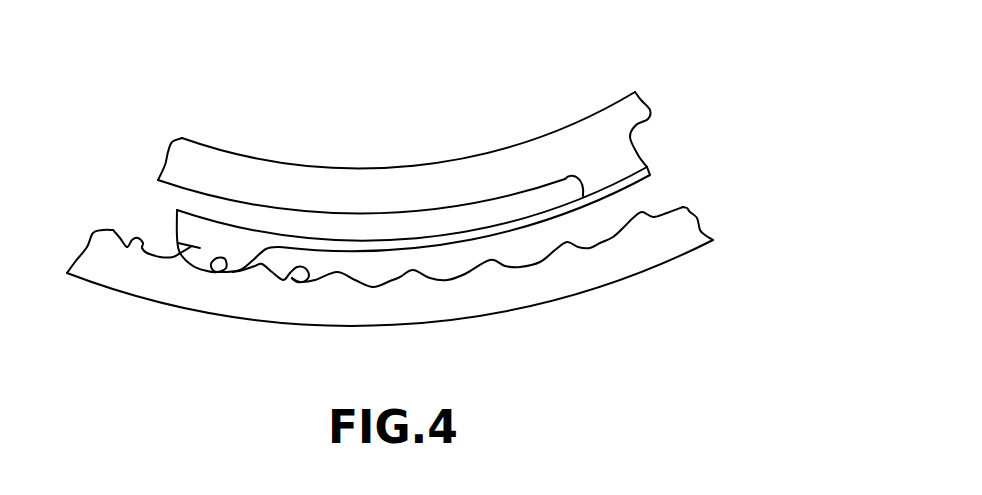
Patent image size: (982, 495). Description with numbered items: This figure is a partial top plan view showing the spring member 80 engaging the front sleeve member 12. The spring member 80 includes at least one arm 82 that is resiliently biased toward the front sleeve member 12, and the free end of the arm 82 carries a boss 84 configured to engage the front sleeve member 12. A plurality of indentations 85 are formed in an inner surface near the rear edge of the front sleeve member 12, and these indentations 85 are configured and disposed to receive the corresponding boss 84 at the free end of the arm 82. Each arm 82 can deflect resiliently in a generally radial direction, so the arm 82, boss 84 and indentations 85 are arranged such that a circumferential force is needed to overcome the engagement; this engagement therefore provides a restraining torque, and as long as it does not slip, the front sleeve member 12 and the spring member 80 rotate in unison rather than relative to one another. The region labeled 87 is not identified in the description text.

The front sleeve member 12 is at (683, 237).
The spring member 80 is at (605, 120).
The arm 82 is at (315, 245).
The boss 84 is at (205, 270).
The indentations 85 is at (300, 272).
The interface layer 87 is at (443, 193).